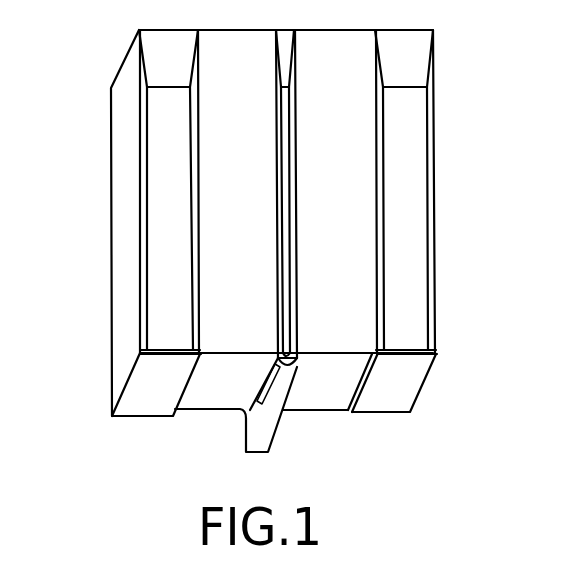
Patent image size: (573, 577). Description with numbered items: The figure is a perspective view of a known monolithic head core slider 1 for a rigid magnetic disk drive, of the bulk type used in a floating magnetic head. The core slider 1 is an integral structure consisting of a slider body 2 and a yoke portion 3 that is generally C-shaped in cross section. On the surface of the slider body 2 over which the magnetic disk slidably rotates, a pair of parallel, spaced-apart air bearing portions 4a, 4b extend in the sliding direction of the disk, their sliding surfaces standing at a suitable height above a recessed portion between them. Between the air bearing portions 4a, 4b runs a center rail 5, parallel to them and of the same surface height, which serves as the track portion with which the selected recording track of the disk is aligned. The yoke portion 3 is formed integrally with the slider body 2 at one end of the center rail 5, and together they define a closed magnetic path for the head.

The core slider 1 is at (460, 86).
The slider body 2 is at (118, 193).
The yoke portion 3 is at (248, 427).
The air bearing portion 4a is at (155, 275).
The air bearing portion 4b is at (415, 263).
The center rail 5 is at (288, 190).